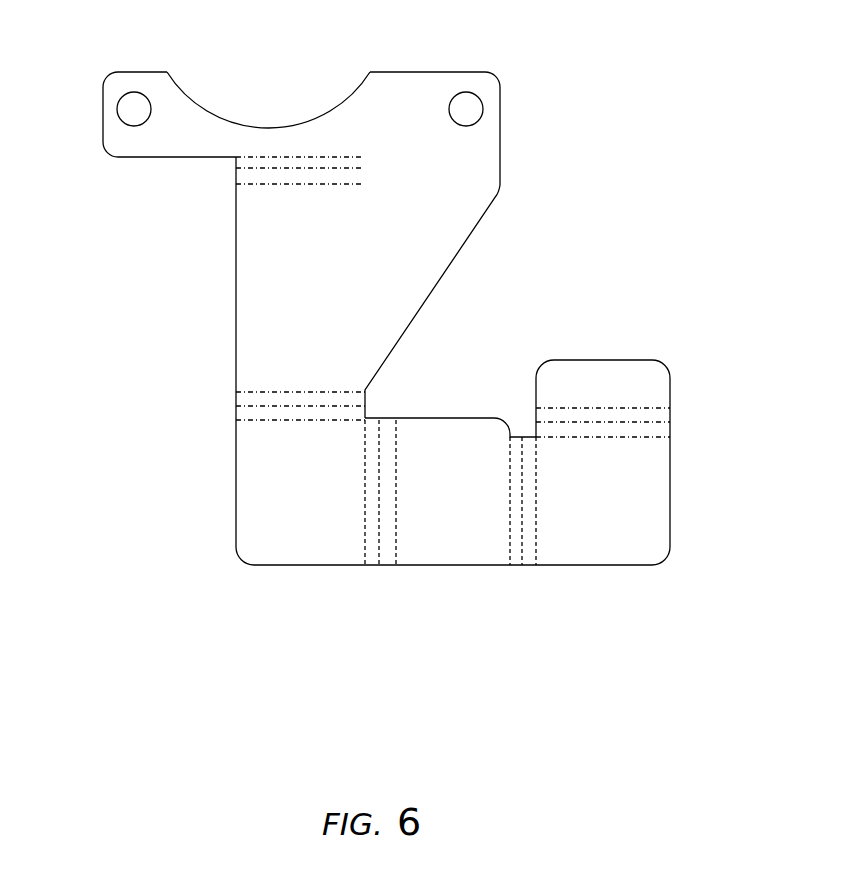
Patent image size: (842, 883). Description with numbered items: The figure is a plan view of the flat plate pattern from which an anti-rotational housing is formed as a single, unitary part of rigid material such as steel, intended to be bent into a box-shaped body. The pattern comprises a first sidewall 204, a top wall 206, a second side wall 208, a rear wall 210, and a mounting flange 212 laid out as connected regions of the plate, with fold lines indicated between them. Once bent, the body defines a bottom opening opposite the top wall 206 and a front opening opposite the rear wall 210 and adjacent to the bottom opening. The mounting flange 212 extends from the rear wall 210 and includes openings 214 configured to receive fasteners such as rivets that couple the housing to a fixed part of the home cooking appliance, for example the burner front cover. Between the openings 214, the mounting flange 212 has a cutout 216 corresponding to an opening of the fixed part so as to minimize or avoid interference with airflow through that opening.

The first sidewall 204 is at (600, 568).
The top wall 206 is at (451, 567).
The second side wall 208 is at (236, 473).
The rear wall 210 is at (236, 293).
The mounting flange 212 is at (103, 95).
The openings 214 is at (468, 92).
The cutouts 216 is at (258, 128).